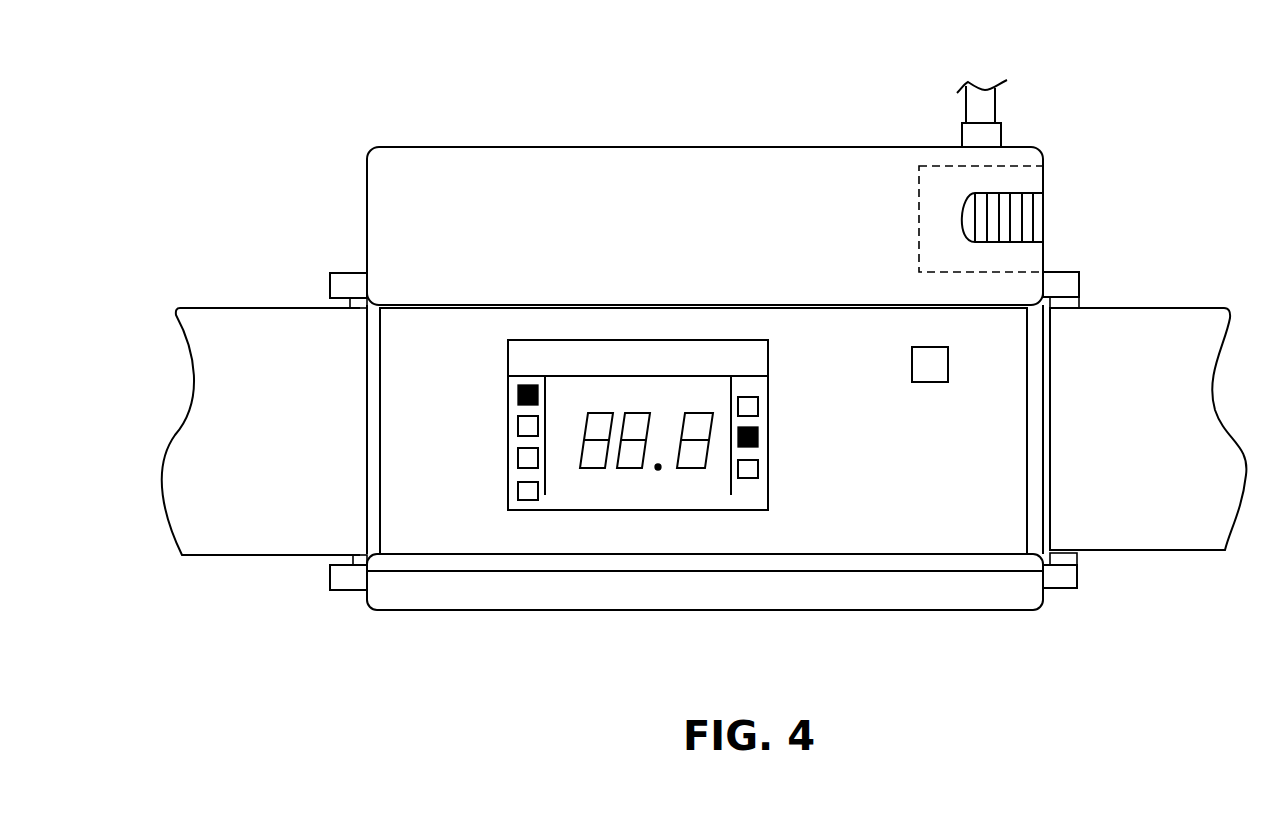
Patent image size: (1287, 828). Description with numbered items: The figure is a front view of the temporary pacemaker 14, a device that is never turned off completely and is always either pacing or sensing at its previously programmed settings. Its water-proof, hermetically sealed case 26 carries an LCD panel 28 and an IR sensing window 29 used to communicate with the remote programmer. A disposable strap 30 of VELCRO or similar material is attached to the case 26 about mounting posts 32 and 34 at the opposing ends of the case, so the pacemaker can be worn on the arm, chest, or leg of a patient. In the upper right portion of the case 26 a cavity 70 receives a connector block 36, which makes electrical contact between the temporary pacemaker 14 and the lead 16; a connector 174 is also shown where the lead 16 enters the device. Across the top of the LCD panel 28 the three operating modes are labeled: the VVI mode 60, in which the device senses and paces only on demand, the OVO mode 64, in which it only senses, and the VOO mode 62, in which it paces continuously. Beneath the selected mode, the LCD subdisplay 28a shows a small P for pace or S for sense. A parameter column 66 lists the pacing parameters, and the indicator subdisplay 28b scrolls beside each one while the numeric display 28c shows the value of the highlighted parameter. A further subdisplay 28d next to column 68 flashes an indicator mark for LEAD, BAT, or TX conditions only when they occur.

The temporary pacemaker 14 is at (1145, 64).
The lead 16 is at (987, 105).
The connector 174 is at (1014, 133).
The case 26 is at (705, 211).
The LCD panel 28 is at (613, 497).
The LCD subdisplay 28a is at (757, 362).
The indicator subdisplay 28b is at (523, 503).
The numeric display 28c is at (685, 469).
The subdisplay 28d is at (748, 475).
The IR sensing window 29 is at (925, 375).
The disposable strap 30 is at (720, 406).
The mounting post 32 is at (1079, 418).
The mounting post 34 is at (345, 280).
The connector block 36 is at (1060, 211).
The VVI mode 60 is at (548, 305).
The VOO mode 62 is at (741, 299).
The OVO mode 64 is at (650, 299).
The column 66 is at (420, 380).
The column 68 is at (818, 427).
The cavity 70 is at (952, 167).